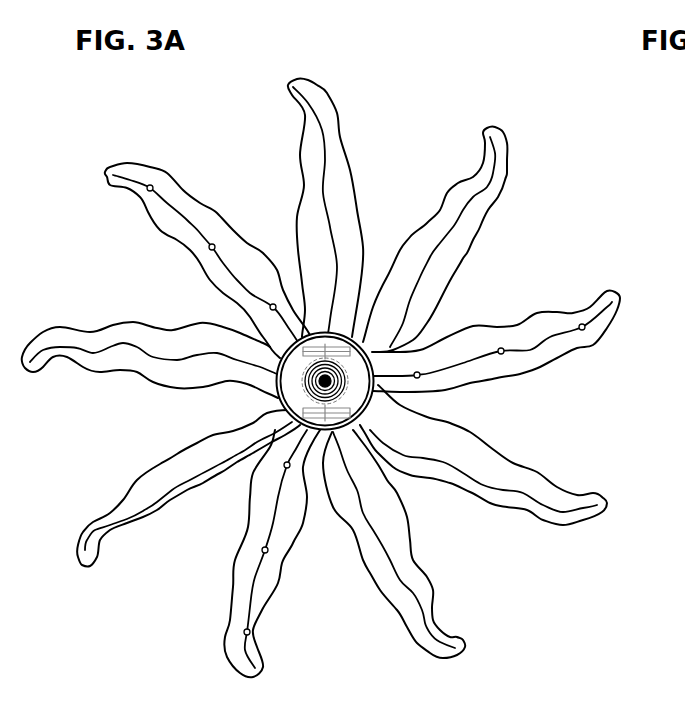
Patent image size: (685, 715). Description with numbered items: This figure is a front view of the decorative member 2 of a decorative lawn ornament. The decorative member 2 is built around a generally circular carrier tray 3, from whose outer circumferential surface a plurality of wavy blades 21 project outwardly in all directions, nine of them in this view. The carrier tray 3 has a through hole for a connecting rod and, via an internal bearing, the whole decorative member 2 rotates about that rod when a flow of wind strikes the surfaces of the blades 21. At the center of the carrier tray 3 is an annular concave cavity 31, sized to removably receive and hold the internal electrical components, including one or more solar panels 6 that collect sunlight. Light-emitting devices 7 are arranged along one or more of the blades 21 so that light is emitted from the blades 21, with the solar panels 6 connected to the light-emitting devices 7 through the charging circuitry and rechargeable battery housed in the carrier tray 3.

The decorative member 2 is at (522, 310).
The blades 21 is at (507, 180).
The light-emitting devices 7 is at (537, 318).
The carrier tray 3 is at (364, 393).
The annular concave cavity 31 is at (358, 387).
The solar panels 6 is at (303, 412).